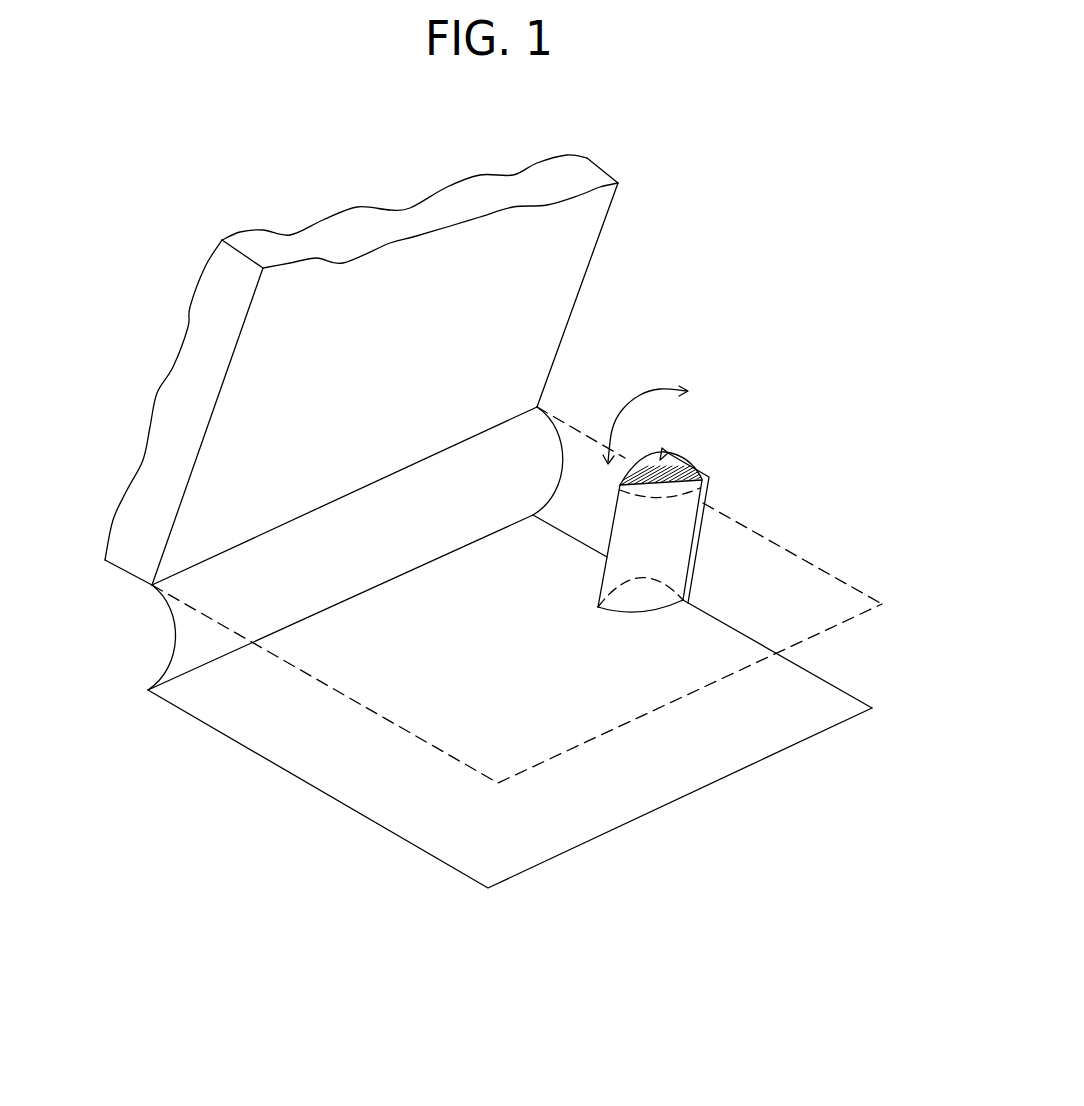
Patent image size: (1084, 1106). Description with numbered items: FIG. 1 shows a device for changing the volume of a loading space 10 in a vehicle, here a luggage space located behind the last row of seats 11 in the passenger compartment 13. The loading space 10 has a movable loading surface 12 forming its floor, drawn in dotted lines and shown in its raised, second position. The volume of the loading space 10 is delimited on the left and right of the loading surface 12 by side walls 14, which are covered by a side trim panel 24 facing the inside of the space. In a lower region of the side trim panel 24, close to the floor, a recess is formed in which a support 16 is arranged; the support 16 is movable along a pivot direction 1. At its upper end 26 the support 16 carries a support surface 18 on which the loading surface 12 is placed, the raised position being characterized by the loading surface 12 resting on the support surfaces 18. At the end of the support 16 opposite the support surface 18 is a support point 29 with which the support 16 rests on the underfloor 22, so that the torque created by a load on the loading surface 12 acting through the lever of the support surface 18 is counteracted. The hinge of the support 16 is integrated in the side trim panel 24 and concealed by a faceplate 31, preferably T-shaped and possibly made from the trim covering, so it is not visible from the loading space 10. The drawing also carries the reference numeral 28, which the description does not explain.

The pivot direction 1 is at (638, 397).
The loading space 10 is at (415, 683).
The last row of seats 11 is at (210, 317).
The movable loading surface 12 is at (545, 648).
The passenger compartment 13 is at (187, 218).
The side walls 14 is at (640, 245).
The support 16 is at (678, 522).
The support surface 18 is at (663, 457).
The underfloor 22 is at (777, 718).
The side trim panel 24 is at (638, 290).
The upper end 26 is at (690, 490).
The container side wall 28 is at (668, 568).
The support point 29 is at (600, 608).
The faceplate 31 is at (708, 470).